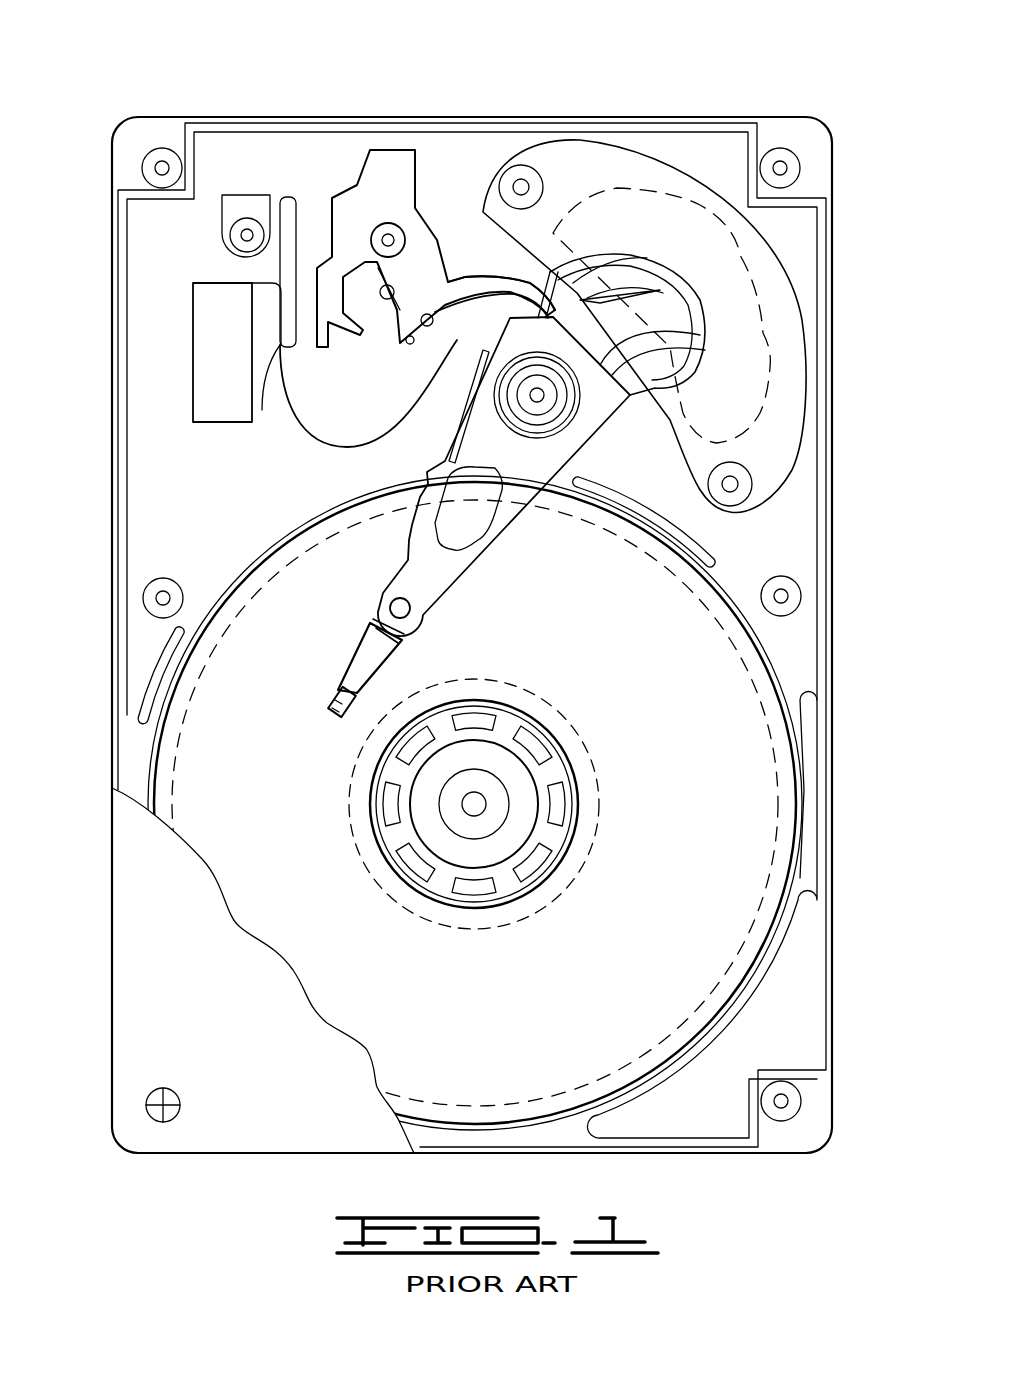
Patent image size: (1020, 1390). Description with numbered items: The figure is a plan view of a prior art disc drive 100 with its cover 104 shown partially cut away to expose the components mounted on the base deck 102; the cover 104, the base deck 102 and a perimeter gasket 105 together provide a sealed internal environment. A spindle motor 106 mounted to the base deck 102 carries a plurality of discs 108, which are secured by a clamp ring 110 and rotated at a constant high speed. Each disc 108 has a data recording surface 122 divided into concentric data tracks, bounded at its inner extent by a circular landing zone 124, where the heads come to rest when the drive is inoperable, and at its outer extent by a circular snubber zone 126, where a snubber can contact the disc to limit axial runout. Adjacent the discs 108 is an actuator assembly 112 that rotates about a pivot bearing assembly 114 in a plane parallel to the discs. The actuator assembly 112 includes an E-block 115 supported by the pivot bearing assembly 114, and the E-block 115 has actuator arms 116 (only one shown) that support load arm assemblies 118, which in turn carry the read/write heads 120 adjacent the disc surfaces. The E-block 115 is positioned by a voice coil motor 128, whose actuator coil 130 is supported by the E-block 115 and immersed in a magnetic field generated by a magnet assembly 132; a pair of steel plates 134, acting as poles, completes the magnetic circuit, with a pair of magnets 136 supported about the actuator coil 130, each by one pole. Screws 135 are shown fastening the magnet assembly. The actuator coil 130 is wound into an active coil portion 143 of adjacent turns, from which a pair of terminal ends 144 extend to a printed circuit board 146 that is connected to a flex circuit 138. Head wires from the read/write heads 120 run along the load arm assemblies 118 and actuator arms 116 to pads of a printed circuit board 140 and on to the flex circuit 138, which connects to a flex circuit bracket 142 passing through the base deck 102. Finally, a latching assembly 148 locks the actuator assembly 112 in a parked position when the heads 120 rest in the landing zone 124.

The disc drive 100 is at (235, 95).
The base deck 102 is at (210, 488).
The cover 104 is at (165, 965).
The perimeter gasket 105 is at (755, 120).
The spindle motor 106 is at (482, 833).
The discs 108 is at (800, 752).
The clamp ring 110 is at (546, 774).
The actuator assembly 112 is at (513, 473).
The pivot bearing assembly 114 is at (548, 412).
The E-block 115 is at (598, 422).
The actuator arms 116 is at (405, 580).
The load arm assemblies 118 is at (350, 660).
The read/write heads 120 is at (330, 700).
The data recording surface 122 is at (730, 882).
The landing zone 124 is at (372, 845).
The snubber zone 126 is at (190, 610).
The voice coil motor 128 is at (573, 223).
The actuator coil 130 is at (580, 290).
The magnet assembly 132 is at (773, 443).
The steel plates 134 is at (785, 360).
The screw 135 is at (500, 178).
The magnets 136 is at (818, 250).
The flex circuit 138 is at (320, 458).
The printed circuit board 140 is at (443, 437).
The flex circuit bracket 142 is at (193, 355).
The active coil portion 143 is at (620, 355).
The terminal ends 144 is at (600, 298).
The printed circuit board 146 is at (535, 300).
The latching assembly 148 is at (393, 185).